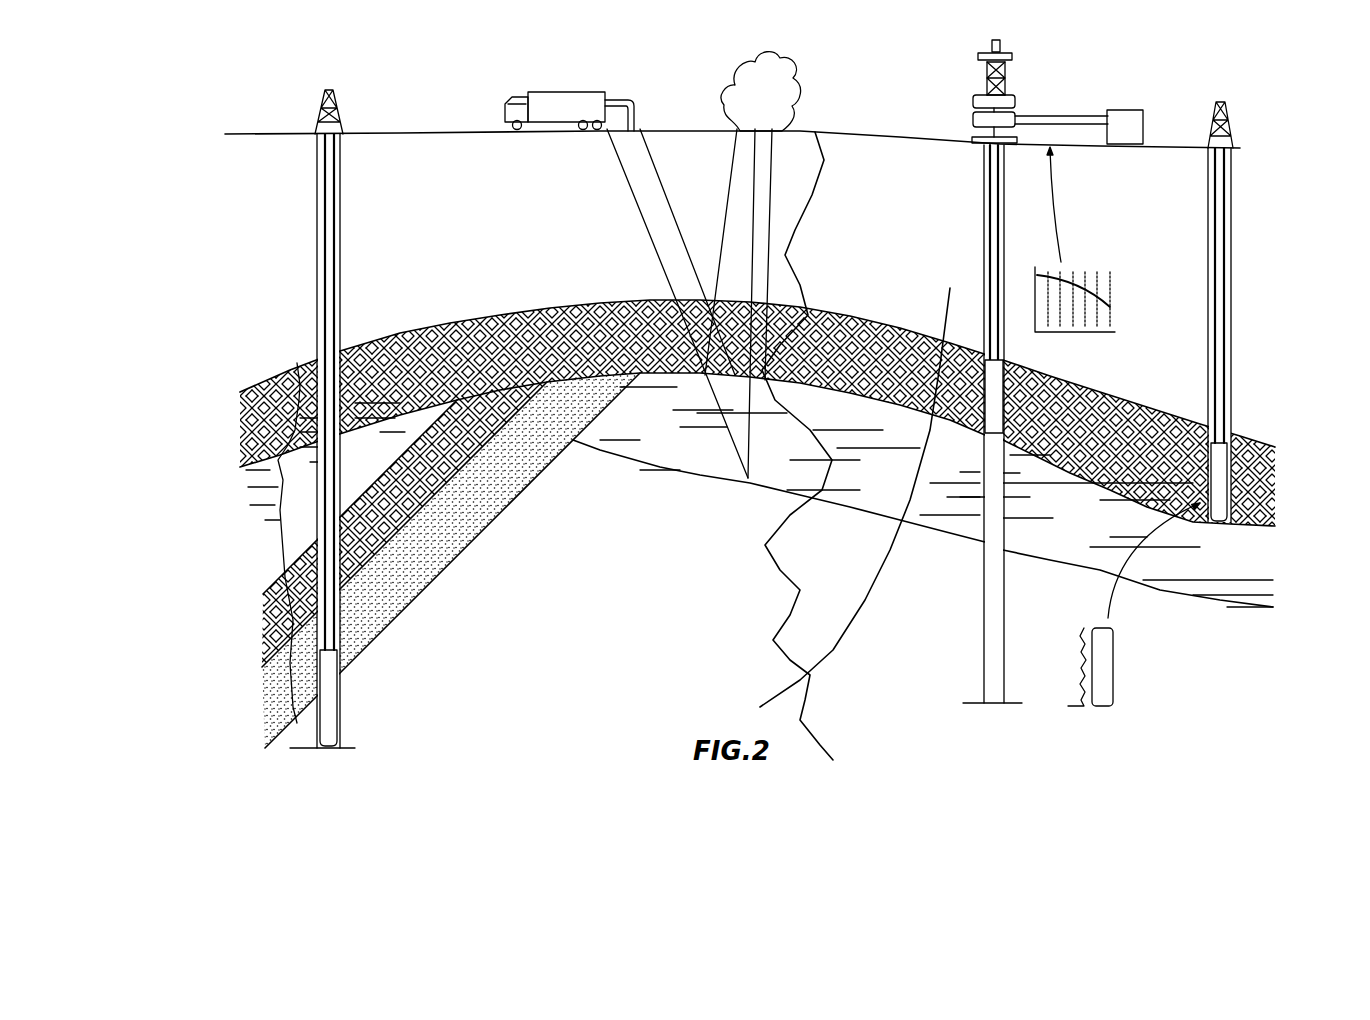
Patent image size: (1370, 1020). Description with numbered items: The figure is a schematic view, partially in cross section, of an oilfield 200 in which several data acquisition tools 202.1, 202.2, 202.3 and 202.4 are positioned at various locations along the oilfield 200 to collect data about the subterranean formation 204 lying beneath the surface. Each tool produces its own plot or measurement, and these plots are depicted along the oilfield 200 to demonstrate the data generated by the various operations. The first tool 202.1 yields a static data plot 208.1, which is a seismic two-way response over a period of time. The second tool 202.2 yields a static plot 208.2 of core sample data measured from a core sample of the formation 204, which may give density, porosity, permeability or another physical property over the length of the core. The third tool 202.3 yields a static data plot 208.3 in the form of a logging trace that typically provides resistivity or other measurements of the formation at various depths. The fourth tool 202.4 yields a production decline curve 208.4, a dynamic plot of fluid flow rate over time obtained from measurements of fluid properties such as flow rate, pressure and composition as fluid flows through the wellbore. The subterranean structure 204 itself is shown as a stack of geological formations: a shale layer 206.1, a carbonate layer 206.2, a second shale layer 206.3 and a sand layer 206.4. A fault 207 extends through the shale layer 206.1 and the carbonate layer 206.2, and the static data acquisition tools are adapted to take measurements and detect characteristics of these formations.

The oilfield 200 is at (1166, 96).
The data acquisition tool 202.1 is at (530, 90).
The data acquisition tool 202.2 is at (1262, 528).
The data acquisition tool 202.3 is at (338, 705).
The data acquisition tool 202.4 is at (1045, 432).
The subterranean formation 204 is at (632, 558).
The shale layer 206.1 is at (468, 366).
The carbonate layer 206.2 is at (398, 460).
The shale layer 206.3 is at (455, 478).
The sand layer 206.4 is at (492, 525).
The fault 207 is at (945, 298).
The static data plot 208.1 is at (793, 584).
The static plot 208.2 is at (1082, 640).
The static data plot 208.3 is at (288, 541).
The production decline curve 208.4 is at (1077, 333).